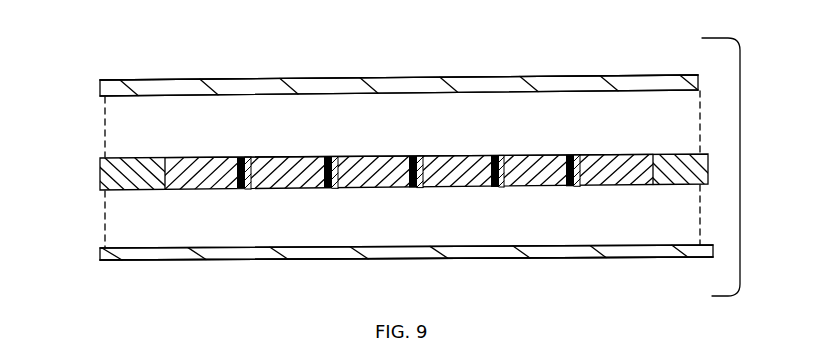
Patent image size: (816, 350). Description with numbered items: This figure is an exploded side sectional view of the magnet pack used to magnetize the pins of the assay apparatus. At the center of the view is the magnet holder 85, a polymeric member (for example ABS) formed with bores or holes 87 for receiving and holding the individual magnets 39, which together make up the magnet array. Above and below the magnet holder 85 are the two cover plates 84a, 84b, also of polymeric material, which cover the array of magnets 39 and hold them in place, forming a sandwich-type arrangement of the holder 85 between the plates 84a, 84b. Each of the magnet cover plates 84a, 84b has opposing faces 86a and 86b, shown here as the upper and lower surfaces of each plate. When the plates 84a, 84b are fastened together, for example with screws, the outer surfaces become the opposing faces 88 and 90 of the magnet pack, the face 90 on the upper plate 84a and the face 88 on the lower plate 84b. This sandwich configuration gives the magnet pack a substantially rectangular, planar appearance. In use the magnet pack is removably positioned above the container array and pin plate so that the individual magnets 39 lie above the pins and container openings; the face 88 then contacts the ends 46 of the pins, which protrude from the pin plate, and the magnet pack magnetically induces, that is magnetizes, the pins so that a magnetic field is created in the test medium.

The cover plate 84a is at (583, 79).
The cover plate 84b is at (578, 252).
The opposing face 86a is at (378, 79).
The opposing face 86b is at (385, 93).
The face of magnet pack 90 is at (257, 80).
The face of magnet pack 88 is at (261, 260).
The magnet holder 85 is at (106, 175).
The bores or holes 87 is at (323, 190).
The individual magnet 39 is at (283, 157).
The end of pin 46 is at (96, 342).